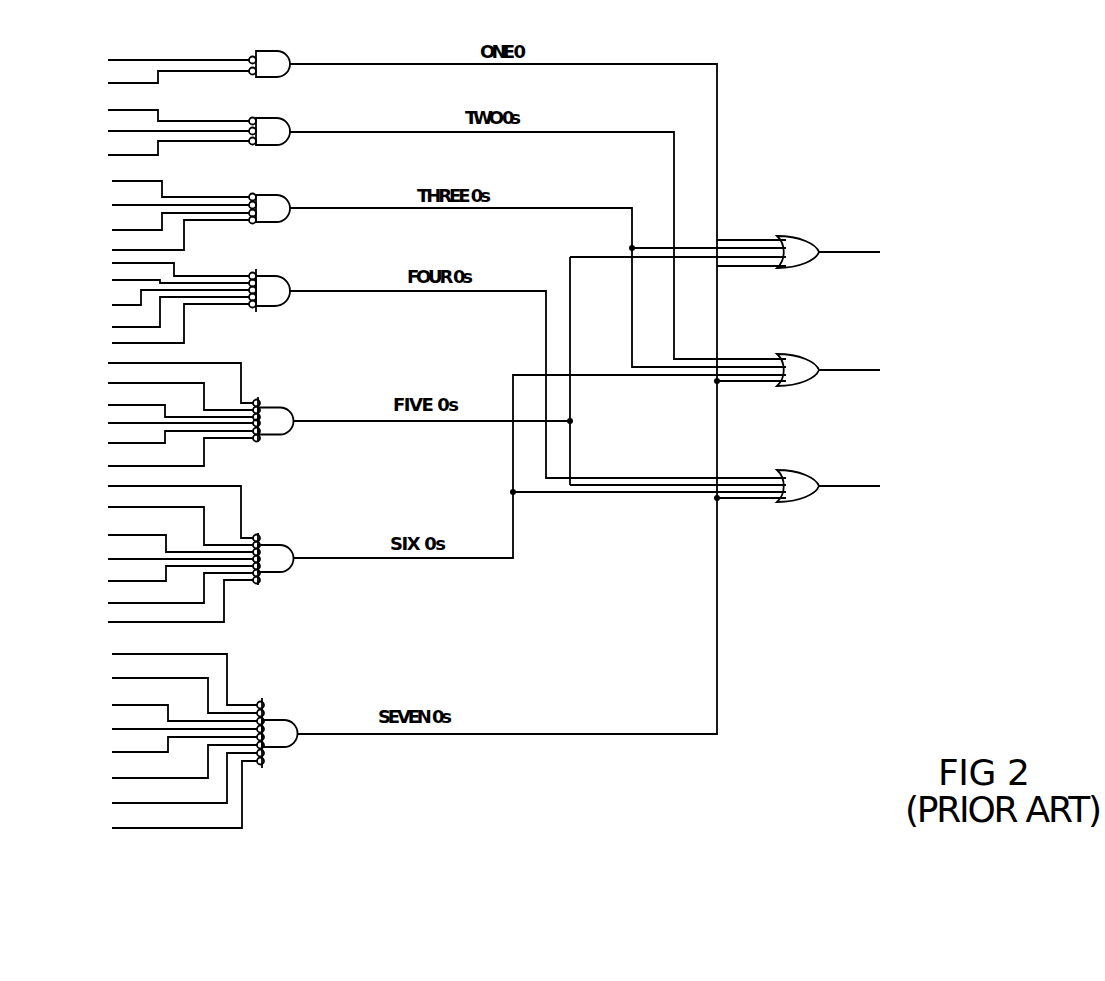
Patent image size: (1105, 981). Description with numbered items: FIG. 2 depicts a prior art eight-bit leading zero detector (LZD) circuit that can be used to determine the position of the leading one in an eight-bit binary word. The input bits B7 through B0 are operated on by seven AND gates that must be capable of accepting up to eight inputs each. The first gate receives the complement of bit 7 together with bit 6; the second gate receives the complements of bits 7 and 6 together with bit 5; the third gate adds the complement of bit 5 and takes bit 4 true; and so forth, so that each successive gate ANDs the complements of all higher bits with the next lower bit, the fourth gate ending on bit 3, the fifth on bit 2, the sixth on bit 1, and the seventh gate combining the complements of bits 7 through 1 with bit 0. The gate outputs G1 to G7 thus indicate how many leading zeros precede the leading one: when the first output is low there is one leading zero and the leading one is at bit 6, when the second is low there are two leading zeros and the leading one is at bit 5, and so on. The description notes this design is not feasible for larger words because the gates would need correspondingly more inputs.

The input bit B0 0 is at (172, 799).
The input bit B1 1 is at (500, 525).
The input bit B2 2 is at (501, 571).
The input bit B3 3 is at (170, 532).
The input bit B4 4 is at (503, 479).
The input bit B5 5 is at (170, 431).
The input bit B6 6 is at (170, 392).
The input bit B7 7 is at (170, 379).